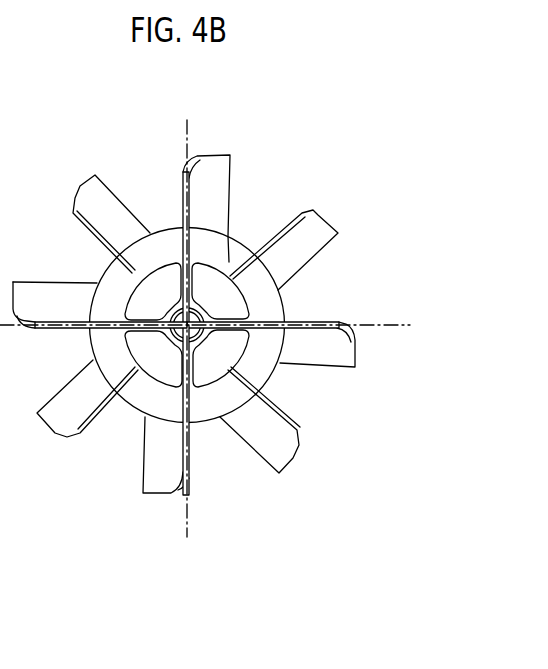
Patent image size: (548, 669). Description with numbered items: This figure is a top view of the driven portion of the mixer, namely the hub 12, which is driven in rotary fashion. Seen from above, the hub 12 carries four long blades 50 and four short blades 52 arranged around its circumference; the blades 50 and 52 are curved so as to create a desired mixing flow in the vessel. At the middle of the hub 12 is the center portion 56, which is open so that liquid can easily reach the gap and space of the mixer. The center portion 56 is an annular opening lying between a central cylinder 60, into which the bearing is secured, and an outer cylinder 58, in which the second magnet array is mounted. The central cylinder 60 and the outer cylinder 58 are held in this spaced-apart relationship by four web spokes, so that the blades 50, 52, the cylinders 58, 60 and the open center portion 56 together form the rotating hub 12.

The hub 12 is at (205, 345).
The long blades 50 is at (213, 180).
The short blades 52 is at (314, 235).
The center portion 56 is at (217, 282).
The outer cylinder 58 is at (268, 308).
The central cylinder 60 is at (171, 298).